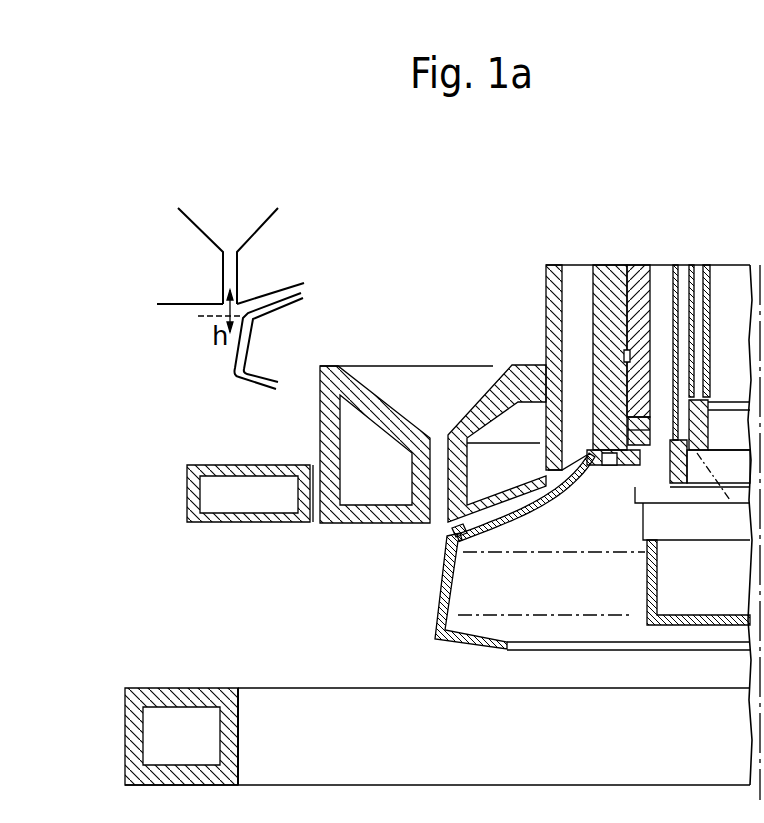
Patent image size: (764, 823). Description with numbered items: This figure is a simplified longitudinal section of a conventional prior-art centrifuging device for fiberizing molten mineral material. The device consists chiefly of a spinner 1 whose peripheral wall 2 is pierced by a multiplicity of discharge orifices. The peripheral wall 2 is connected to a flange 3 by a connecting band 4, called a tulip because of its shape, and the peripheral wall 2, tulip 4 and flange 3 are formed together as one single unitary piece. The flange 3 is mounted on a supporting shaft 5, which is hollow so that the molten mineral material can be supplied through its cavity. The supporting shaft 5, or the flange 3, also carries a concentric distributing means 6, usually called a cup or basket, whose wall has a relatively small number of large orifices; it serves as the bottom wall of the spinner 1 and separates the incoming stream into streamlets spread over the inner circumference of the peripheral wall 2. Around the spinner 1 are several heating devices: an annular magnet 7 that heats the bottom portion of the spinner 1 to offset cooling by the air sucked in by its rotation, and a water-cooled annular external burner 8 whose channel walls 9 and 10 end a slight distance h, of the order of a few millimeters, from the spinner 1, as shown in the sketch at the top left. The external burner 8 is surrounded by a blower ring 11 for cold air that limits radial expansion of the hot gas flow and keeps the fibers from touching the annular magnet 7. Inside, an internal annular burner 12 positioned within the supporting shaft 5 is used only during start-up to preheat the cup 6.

The spinner 1 is at (418, 605).
The peripheral wall 2 is at (453, 600).
The flange 3 is at (608, 463).
The connecting band 4 is at (553, 503).
The supporting shaft 5 is at (607, 268).
The distributing means 6 is at (642, 582).
The annular magnet 7 is at (198, 693).
The external burner 8 is at (368, 525).
The channel wall 9 is at (407, 527).
The channel wall 10 is at (452, 528).
The blower ring 11 is at (260, 528).
The internal annular burner 12 is at (682, 358).